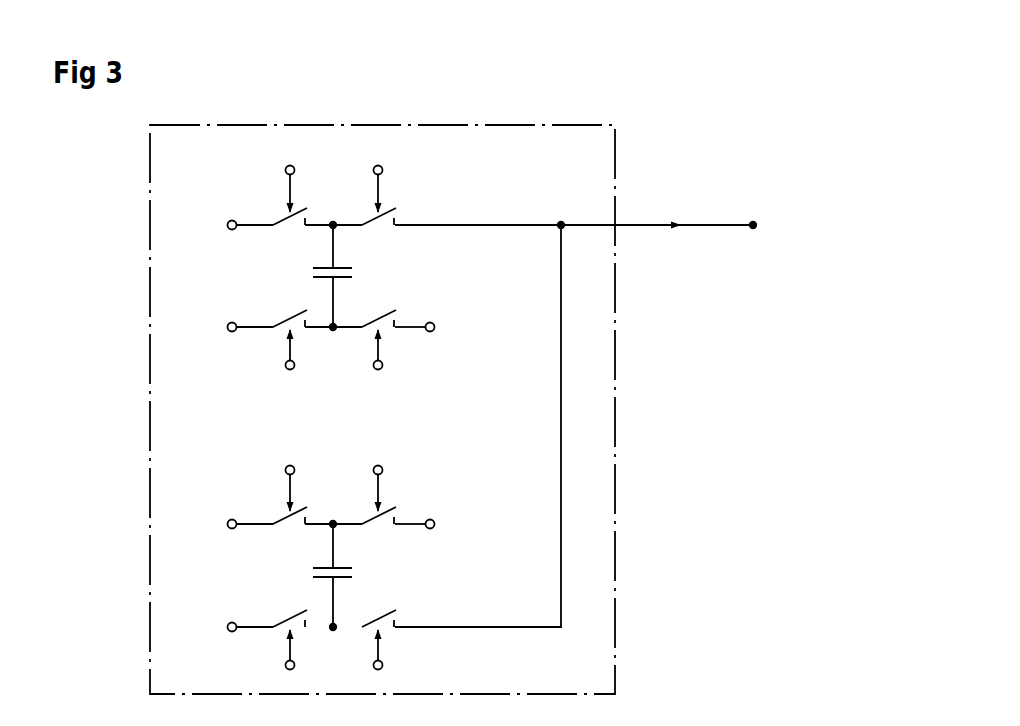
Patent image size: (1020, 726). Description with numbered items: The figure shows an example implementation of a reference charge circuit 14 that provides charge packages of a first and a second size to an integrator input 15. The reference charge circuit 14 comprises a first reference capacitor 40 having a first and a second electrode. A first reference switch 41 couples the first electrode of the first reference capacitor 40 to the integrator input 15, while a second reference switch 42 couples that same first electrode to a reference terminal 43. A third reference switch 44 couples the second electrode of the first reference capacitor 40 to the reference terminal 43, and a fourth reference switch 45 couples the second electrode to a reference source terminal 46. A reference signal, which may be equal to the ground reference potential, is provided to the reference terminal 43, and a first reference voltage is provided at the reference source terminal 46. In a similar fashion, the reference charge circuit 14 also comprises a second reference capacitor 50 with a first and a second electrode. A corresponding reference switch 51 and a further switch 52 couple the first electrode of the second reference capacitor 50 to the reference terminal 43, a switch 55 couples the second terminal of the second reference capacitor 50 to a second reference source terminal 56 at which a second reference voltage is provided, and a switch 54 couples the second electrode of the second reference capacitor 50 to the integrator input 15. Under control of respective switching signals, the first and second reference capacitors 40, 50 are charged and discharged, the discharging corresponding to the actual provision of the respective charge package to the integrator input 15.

The reference charge circuit 14 is at (321, 123).
The integrator input 15 is at (757, 222).
The first reference capacitor 40 is at (314, 272).
The first reference switch 41 is at (368, 220).
The second reference switch 42 is at (283, 220).
The reference terminal 43 is at (231, 219).
The third reference switch 44 is at (384, 312).
The fourth reference switch 45 is at (283, 322).
The reference source terminal 46 is at (231, 321).
The second reference capacitor 50 is at (314, 572).
The reference switch 51 is at (368, 519).
The switch 52 is at (283, 519).
The switch 54 is at (384, 612).
The switch 55 is at (283, 622).
The second reference source terminal 56 is at (231, 621).